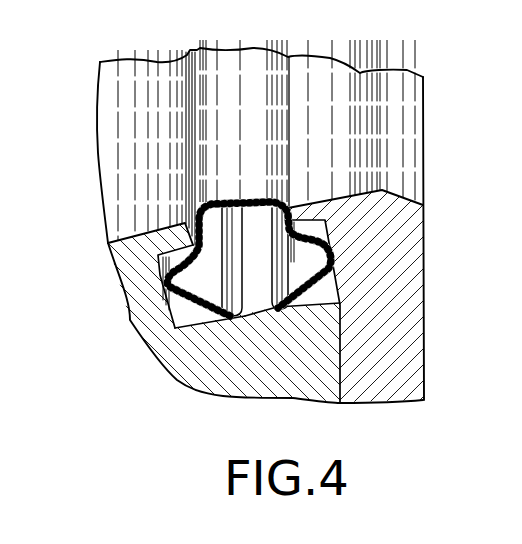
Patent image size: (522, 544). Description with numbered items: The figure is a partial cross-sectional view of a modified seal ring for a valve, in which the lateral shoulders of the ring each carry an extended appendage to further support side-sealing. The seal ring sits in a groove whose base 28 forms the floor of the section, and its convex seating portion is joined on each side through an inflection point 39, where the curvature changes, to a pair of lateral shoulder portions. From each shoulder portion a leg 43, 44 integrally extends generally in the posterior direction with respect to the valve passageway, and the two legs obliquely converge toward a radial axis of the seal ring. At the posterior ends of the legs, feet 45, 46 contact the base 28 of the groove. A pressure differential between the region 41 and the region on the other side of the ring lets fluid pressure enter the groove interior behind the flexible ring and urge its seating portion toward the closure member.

The base 28 is at (240, 310).
The inflection point 39 is at (258, 233).
The region 41 is at (120, 150).
The leg 43 is at (202, 288).
The leg 44 is at (293, 283).
The foot 45 is at (242, 317).
The foot 46 is at (265, 312).